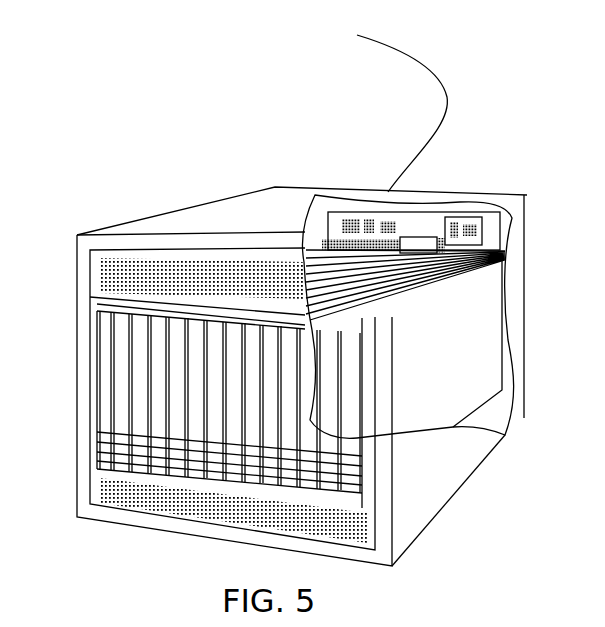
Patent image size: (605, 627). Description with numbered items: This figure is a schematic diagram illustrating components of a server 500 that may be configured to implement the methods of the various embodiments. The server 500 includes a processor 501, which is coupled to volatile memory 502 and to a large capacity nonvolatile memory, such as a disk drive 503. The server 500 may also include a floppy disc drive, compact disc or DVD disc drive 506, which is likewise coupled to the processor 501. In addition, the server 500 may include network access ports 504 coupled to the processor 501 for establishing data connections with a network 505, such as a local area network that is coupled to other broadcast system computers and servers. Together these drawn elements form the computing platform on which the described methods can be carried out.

The server 500 is at (213, 202).
The processor 501 is at (420, 243).
The volatile memory 502 is at (480, 243).
The disk drive 503 is at (142, 350).
The network access ports 504 is at (330, 243).
The network 505 is at (448, 97).
The compact disc (CD) or DVD disc drive 506 is at (122, 377).